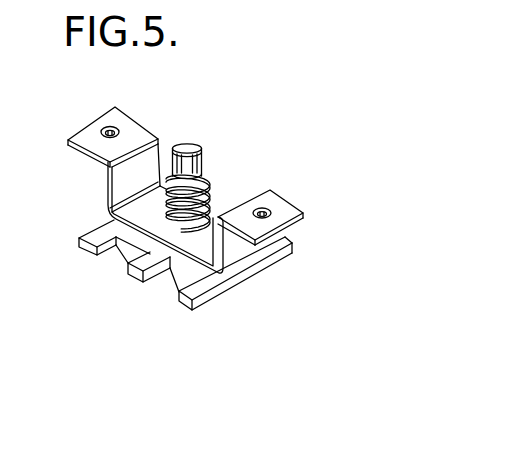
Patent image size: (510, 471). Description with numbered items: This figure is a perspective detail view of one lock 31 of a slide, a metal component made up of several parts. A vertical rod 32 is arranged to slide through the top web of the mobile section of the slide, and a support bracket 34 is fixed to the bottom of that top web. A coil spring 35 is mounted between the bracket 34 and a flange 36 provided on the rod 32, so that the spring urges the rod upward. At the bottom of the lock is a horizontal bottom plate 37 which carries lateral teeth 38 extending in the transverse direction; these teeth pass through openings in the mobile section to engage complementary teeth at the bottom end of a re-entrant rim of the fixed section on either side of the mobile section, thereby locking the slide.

The lock 31 is at (213, 153).
The vertical rod 32 is at (190, 148).
The support bracket 34 is at (260, 226).
The coil spring 35 is at (205, 199).
The flange 36 is at (206, 178).
The horizontal bottom plate 37 is at (232, 283).
The lateral teeth 38 is at (147, 263).